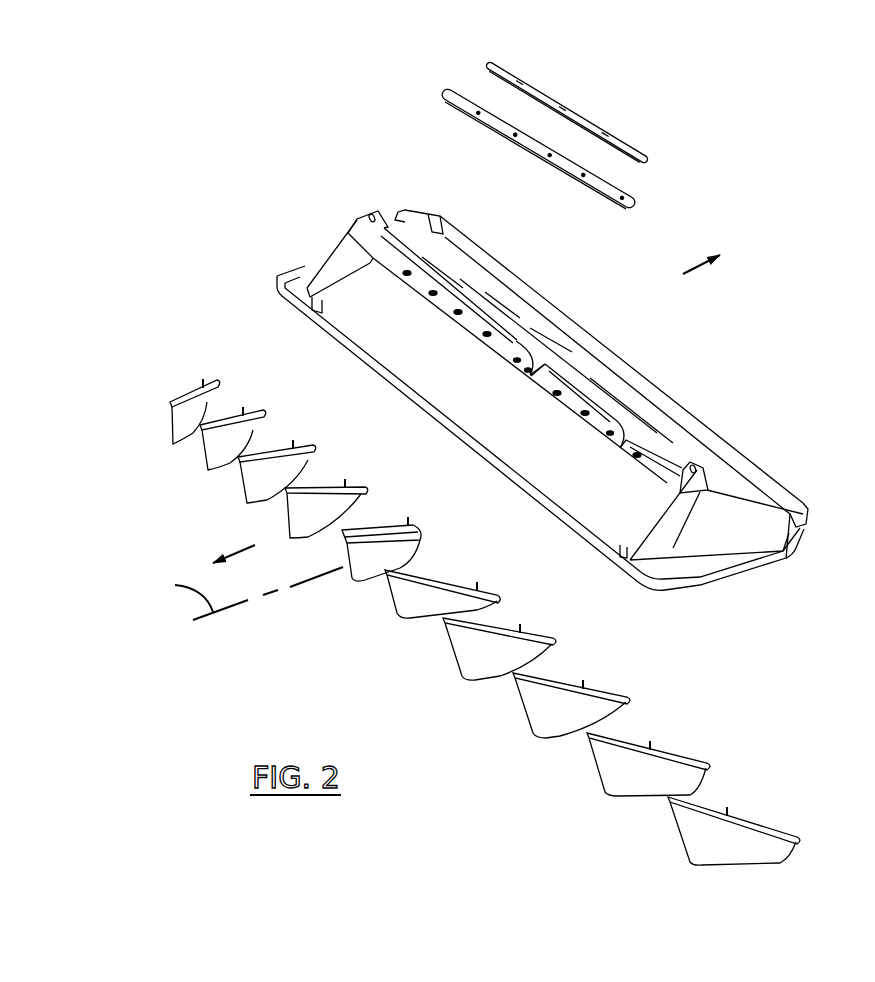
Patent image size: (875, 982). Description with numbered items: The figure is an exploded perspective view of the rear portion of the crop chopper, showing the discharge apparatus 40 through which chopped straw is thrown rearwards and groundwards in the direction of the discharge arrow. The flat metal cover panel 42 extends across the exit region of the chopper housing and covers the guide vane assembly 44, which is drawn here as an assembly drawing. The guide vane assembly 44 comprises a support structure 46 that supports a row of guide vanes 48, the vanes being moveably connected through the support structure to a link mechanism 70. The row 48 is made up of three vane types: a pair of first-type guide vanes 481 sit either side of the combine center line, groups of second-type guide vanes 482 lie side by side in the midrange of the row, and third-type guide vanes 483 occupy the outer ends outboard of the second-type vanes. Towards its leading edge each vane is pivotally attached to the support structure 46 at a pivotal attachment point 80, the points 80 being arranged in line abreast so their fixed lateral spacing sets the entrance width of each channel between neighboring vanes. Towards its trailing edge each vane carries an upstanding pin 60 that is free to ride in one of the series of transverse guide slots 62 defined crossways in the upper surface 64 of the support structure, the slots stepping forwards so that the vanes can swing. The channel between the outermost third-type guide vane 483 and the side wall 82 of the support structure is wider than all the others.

The discharge apparatus 40 is at (196, 259).
The cover panel 42 is at (548, 312).
The guide vane assembly 44 is at (742, 366).
The support structure 46 is at (305, 284).
The row of guide vanes 48 is at (142, 360).
The upstanding pin 60 is at (652, 742).
The series of transverse guide slots 62 is at (625, 402).
The upper surface 64 is at (436, 257).
The link mechanism 70 is at (603, 108).
The pivotal attachment points 80 is at (346, 240).
The side wall 82 is at (736, 535).
The type 1 guide vanes 481 is at (458, 583).
The type 2 guide vanes 482 is at (356, 482).
The type 3 guide vanes 483 is at (265, 405).